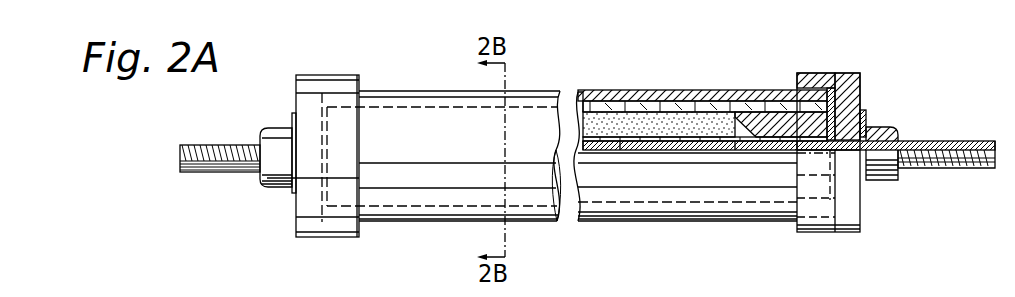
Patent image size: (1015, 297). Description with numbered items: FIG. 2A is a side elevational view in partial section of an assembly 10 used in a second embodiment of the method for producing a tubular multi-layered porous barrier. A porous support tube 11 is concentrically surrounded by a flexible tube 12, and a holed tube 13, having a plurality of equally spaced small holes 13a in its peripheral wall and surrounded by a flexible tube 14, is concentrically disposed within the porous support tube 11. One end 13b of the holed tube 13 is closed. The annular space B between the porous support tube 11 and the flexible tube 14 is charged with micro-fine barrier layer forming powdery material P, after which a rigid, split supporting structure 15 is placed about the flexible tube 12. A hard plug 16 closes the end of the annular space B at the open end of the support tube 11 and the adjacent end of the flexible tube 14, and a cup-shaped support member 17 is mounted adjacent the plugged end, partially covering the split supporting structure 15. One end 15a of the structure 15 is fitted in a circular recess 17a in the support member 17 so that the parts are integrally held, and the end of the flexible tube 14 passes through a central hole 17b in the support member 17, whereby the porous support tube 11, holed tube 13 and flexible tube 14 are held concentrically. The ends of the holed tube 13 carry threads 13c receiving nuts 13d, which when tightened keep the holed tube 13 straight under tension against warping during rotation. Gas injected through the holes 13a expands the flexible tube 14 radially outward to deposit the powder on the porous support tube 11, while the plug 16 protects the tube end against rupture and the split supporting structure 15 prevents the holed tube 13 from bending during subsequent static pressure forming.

The assembly 10 is at (428, 78).
The porous support tube 11 is at (590, 108).
The flexible tube 12 is at (622, 98).
The holed tube 13 is at (736, 150).
The small holes 13a is at (603, 150).
The closed end of holed tube 13b is at (180, 158).
The threads 13c is at (968, 138).
The nuts 13d is at (883, 121).
The flexible tube 14 is at (771, 150).
The split supporting structure 15 is at (668, 95).
The end of split supporting structure 15a is at (833, 93).
The hard plug 16 is at (775, 128).
The cup-shaped support member 17 is at (852, 75).
The circular recess 17a is at (808, 88).
The hole 17b is at (849, 150).
The annular space B is at (666, 140).
The powdery material P is at (705, 120).